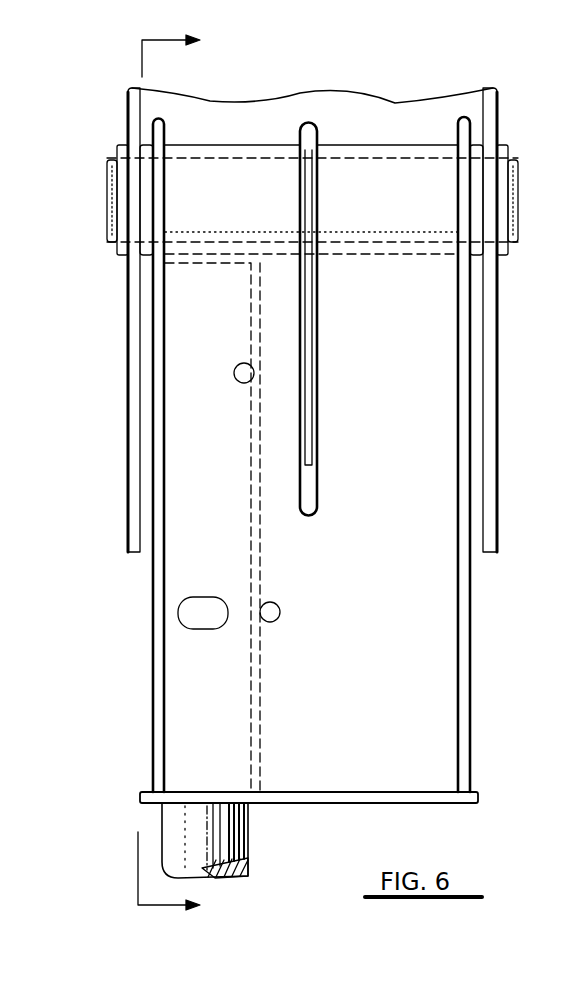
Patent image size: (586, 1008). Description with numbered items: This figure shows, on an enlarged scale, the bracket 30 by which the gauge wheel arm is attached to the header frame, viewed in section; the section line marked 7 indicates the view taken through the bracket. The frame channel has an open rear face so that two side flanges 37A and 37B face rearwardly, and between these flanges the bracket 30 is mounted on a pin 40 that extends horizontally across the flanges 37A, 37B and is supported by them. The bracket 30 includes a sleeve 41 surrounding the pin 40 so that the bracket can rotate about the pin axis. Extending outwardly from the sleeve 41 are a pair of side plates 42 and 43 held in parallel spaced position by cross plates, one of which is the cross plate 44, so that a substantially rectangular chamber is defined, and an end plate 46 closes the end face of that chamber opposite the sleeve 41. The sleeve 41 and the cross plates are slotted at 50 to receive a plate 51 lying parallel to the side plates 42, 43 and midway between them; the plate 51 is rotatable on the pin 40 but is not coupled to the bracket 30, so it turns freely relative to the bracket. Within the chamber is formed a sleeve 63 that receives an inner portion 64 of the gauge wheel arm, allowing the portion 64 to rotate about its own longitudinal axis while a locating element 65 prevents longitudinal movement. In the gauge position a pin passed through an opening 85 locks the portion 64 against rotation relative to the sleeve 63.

The section line for FIG. 7 is at (179, 473).
The bracket 30 is at (474, 655).
The side flange 37A is at (127, 355).
The side flange 37B is at (497, 410).
The pin 40 is at (104, 198).
The sleeve 41 is at (263, 140).
The side plate 42 is at (153, 696).
The side plate 43 is at (470, 739).
The cross plate 44 is at (368, 762).
The end plate 46 is at (462, 803).
The slot 50 is at (312, 500).
The plate 51 is at (310, 390).
The sleeve 63 is at (266, 692).
The inner portion of the arm 64 is at (254, 833).
The locating element 65 is at (244, 372).
The opening 85 is at (195, 620).